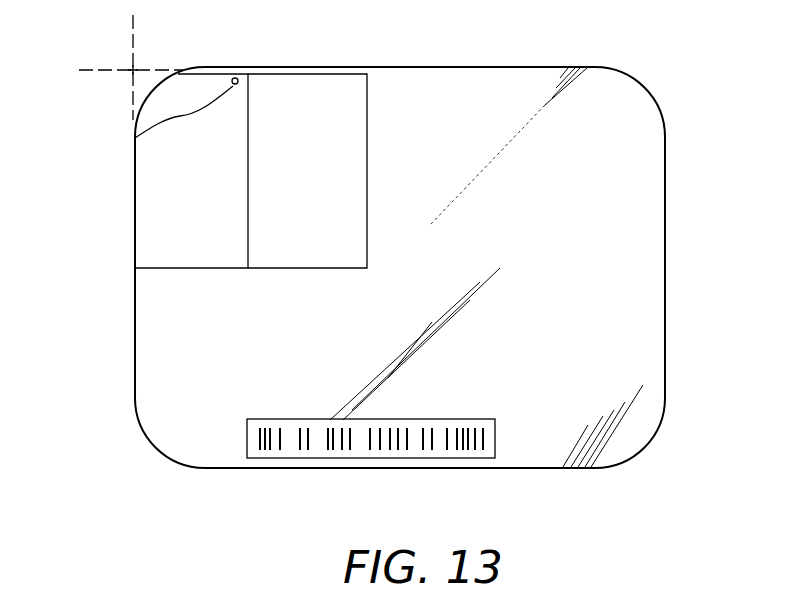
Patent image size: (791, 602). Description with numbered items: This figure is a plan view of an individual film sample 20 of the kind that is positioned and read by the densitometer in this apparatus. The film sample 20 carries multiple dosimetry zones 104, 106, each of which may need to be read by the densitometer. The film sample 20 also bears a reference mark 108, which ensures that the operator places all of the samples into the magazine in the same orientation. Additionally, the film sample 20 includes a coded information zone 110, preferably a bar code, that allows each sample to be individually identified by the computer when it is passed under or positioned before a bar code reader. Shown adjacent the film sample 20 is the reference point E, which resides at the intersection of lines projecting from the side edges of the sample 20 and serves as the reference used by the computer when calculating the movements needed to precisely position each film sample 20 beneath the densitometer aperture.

The film sample 20 is at (100, 492).
The dosimetry zone 104 is at (189, 262).
The dosimetry zone 106 is at (322, 262).
The reference mark 108 is at (135, 138).
The coded information zone 110 is at (367, 420).
The reference point E is at (133, 70).